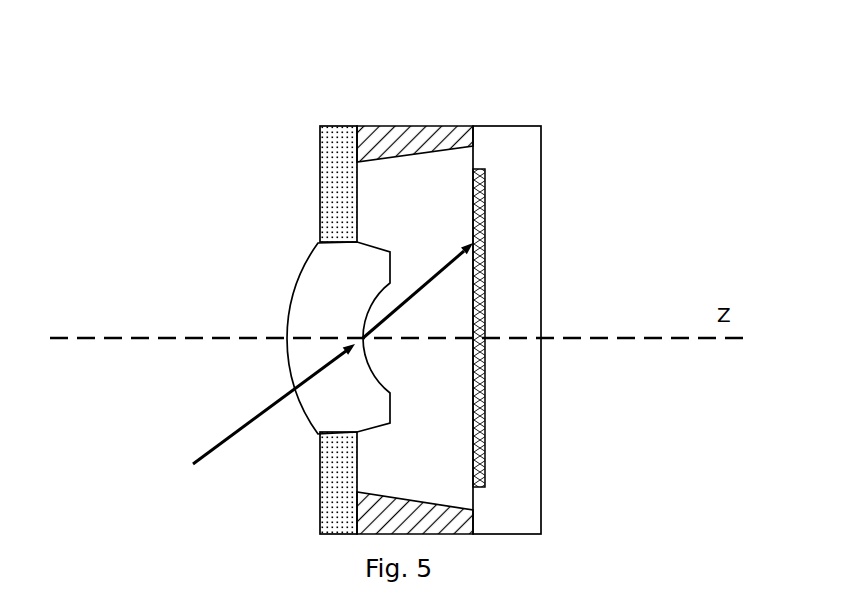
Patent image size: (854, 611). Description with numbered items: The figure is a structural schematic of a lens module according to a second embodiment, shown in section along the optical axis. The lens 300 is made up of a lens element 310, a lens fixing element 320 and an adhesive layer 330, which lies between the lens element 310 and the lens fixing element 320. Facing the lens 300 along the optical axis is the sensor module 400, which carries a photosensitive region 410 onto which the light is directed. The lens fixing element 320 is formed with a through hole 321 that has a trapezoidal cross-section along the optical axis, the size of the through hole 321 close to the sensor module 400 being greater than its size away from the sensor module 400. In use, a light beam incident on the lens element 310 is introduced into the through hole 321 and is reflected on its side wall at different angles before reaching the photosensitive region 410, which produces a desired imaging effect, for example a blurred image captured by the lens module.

The lens 300 is at (229, 238).
The lens element 310 is at (323, 265).
The lens fixing element 320 is at (352, 304).
The through hole 321 is at (412, 172).
The adhesive layer 330 is at (332, 190).
The sensor module 400 is at (511, 143).
The photosensitive region 410 is at (484, 222).